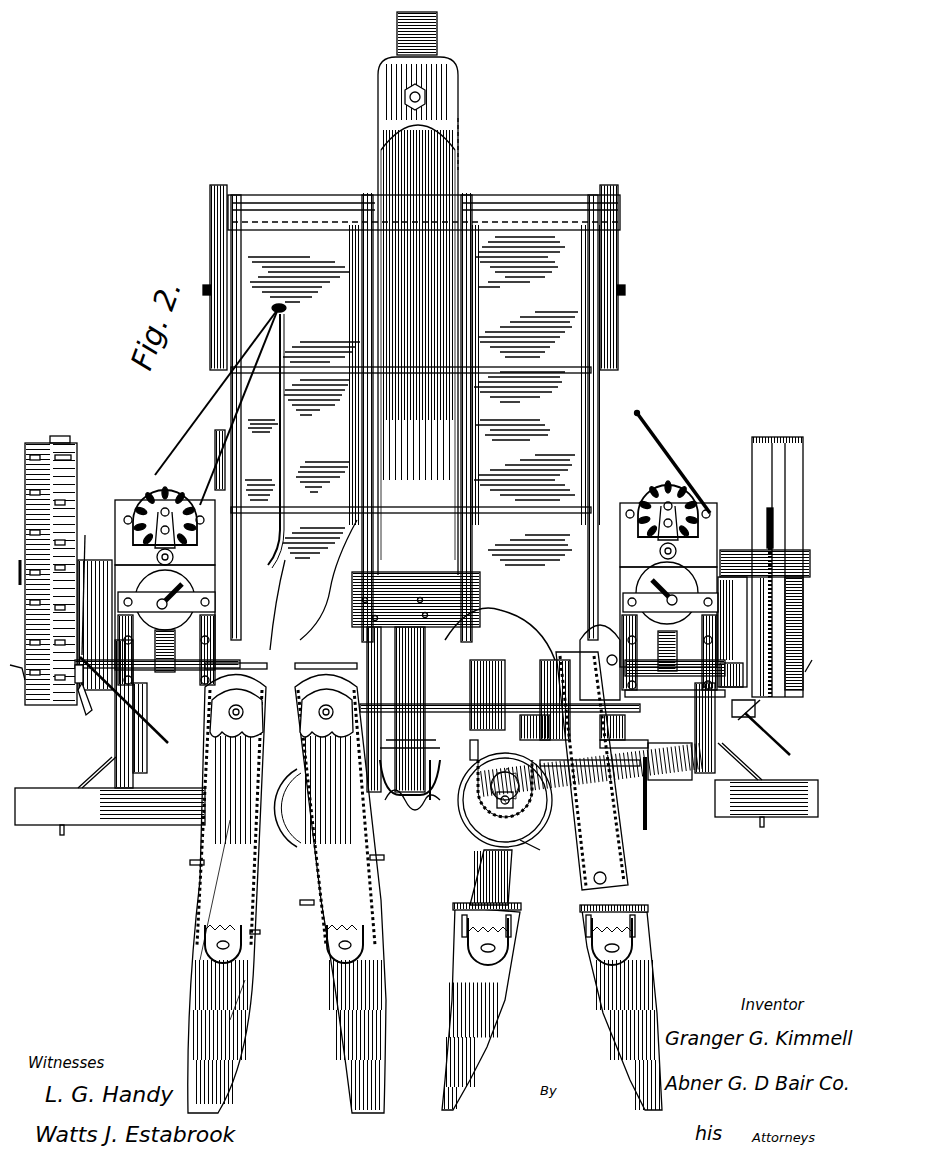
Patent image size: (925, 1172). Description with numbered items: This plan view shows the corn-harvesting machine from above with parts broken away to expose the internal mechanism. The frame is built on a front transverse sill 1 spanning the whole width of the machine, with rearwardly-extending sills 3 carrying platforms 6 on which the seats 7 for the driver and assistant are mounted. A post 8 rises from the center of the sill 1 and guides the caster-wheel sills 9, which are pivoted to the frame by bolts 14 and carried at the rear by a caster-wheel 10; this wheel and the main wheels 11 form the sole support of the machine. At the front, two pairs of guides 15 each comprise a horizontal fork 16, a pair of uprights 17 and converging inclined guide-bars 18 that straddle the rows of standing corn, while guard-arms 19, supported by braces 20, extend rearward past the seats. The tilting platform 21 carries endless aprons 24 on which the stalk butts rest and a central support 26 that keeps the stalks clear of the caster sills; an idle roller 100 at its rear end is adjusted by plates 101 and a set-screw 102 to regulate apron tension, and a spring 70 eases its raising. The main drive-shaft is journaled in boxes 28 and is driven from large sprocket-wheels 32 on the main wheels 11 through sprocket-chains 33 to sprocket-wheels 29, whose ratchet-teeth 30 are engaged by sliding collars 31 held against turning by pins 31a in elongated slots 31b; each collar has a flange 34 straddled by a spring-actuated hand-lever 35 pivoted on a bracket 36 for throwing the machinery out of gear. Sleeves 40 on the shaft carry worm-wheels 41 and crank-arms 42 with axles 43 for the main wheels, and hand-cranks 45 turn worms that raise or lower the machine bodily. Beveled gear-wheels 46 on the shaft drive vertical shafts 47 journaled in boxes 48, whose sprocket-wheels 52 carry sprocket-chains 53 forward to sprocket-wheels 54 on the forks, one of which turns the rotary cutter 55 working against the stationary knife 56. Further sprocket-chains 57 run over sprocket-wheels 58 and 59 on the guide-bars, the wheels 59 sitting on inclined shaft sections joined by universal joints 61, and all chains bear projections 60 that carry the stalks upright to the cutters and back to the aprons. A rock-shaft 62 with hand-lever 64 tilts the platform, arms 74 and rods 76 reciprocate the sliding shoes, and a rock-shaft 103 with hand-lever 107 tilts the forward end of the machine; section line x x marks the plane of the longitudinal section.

The front transverse sill 1 is at (416, 789).
The rearwardly-extending sills 3 is at (407, 700).
The platforms 6 is at (426, 553).
The seats 7 is at (148, 505).
The post 8 is at (412, 805).
The caster-wheel sills 9 is at (432, 805).
The caster-wheel 10 is at (396, 30).
The main wheels 11 is at (36, 442).
The bolts 14 is at (410, 733).
The guides 15 is at (300, 1068).
The horizontal fork 16 is at (465, 897).
The uprights 17 is at (760, 480).
The inclined guide-bars 18 is at (427, 928).
The guard-arms 19 is at (281, 462).
The braces 20 is at (211, 470).
The tilting platform 21 is at (493, 418).
The endless aprons 24 is at (560, 245).
The central support 26 is at (605, 668).
The boxes 28 is at (400, 663).
The sprocket-wheels 29 is at (765, 591).
The ratchet-teeth 30 is at (731, 652).
The collars 31 is at (75, 657).
The pins 31a is at (453, 706).
The elongated slots 31b is at (445, 626).
The large sprocket-wheels 32 is at (766, 540).
The sprocket-chains 33 is at (777, 564).
The circumferential flange 34 is at (74, 657).
The spring-actuated hand-lever 35 is at (417, 710).
The bracket 36 is at (226, 635).
The sleeve 40 is at (417, 658).
The worm-wheel 41 is at (675, 703).
The crank-arms 42 is at (728, 632).
The axles 43 is at (791, 605).
The hand-crank 45 is at (416, 616).
The beveled gear-wheels 46 is at (416, 680).
The vertical shafts 47 is at (410, 770).
The boxes 48 is at (595, 662).
The sprocket-wheels 52 is at (500, 695).
The sprocket-chains 53 is at (370, 805).
The sprocket-wheels 54 is at (576, 883).
The rotary cutter 55 is at (413, 800).
The stationary knife 56 is at (411, 851).
The sprocket-chains 57 is at (262, 892).
The sprocket-wheels 58 is at (328, 944).
The sprocket-wheels 59 is at (380, 687).
The projections 60 is at (198, 866).
The universal joints 61 is at (498, 650).
The rock-shaft 62 is at (633, 755).
The hand-lever 64 is at (594, 793).
The spring 70 is at (412, 177).
The arms 74 is at (426, 425).
The rods 76 is at (450, 515).
The roller 100 is at (606, 188).
The plates 101 is at (209, 230).
The set-screw 102 is at (403, 289).
The rock-shaft 103 is at (437, 733).
The hand-lever 107 is at (414, 720).
The section line x is at (455, 484).